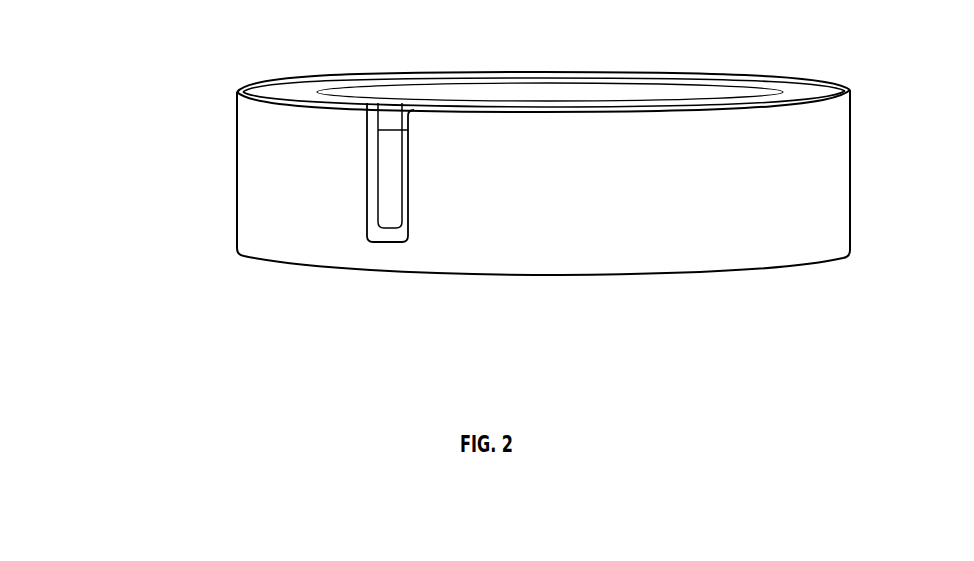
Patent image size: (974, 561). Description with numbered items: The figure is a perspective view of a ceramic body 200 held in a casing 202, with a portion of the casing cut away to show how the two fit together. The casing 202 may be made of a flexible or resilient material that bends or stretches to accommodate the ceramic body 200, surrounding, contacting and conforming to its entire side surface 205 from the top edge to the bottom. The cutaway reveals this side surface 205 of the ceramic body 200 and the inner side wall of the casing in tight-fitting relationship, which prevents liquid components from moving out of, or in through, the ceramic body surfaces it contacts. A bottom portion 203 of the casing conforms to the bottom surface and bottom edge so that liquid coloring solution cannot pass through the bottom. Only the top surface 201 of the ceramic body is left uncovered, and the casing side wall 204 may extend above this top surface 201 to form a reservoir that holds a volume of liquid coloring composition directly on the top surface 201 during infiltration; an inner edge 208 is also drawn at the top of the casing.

The ceramic body 200 is at (392, 198).
The top surface 201 is at (502, 97).
The casing 202 is at (802, 198).
The bottom portion 203 is at (637, 275).
The casing side wall 204 is at (283, 85).
The side surface 205 is at (388, 167).
The inner edge 208 is at (627, 77).